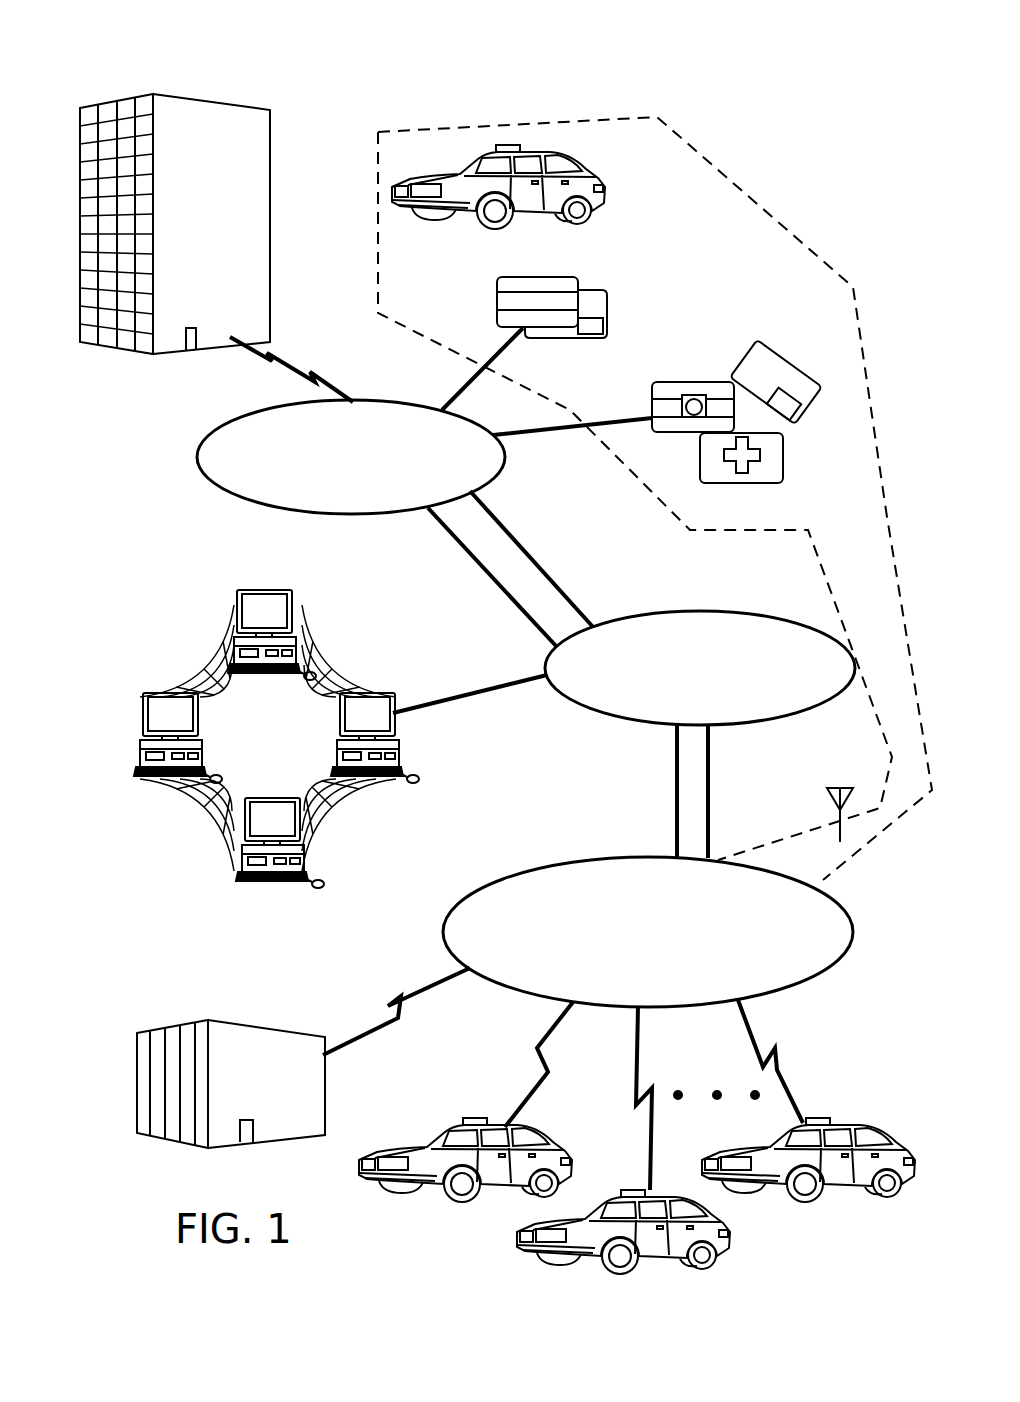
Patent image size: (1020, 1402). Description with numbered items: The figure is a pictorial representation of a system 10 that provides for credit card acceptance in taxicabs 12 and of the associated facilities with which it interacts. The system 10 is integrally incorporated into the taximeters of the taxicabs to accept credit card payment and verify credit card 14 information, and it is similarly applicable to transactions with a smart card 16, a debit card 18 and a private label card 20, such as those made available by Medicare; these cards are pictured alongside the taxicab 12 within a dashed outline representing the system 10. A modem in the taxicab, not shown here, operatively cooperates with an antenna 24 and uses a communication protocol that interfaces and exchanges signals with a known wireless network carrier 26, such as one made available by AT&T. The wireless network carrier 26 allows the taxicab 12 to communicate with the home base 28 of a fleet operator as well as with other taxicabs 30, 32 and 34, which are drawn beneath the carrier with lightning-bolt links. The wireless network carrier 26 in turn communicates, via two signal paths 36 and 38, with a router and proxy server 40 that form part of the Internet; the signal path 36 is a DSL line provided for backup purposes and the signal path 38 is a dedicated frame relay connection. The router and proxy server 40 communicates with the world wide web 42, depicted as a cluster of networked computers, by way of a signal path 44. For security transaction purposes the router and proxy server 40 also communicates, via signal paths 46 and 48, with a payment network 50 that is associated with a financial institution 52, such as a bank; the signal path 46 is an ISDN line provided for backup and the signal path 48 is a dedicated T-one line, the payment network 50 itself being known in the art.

The system 10 is at (560, 82).
The taxicab 12 is at (592, 208).
The credit card 14 is at (567, 302).
The smart card 16 is at (760, 362).
The debit card 18 is at (720, 397).
The private label card 20 is at (770, 467).
The antenna 24 is at (828, 787).
The wireless network carrier 26 is at (748, 952).
The home base 28 is at (160, 1037).
The taxicab 30 is at (432, 1133).
The taxicab 32 is at (663, 1198).
The taxicab 34 is at (857, 1137).
The signal path 36 is at (677, 787).
The signal path 38 is at (708, 793).
The router and proxy server 40 is at (810, 683).
The world wide web 42 is at (240, 600).
The signal path 44 is at (452, 703).
The signal path 46 is at (480, 565).
The signal path 48 is at (523, 547).
The payment network 50 is at (463, 473).
The financial institution 52 is at (242, 120).